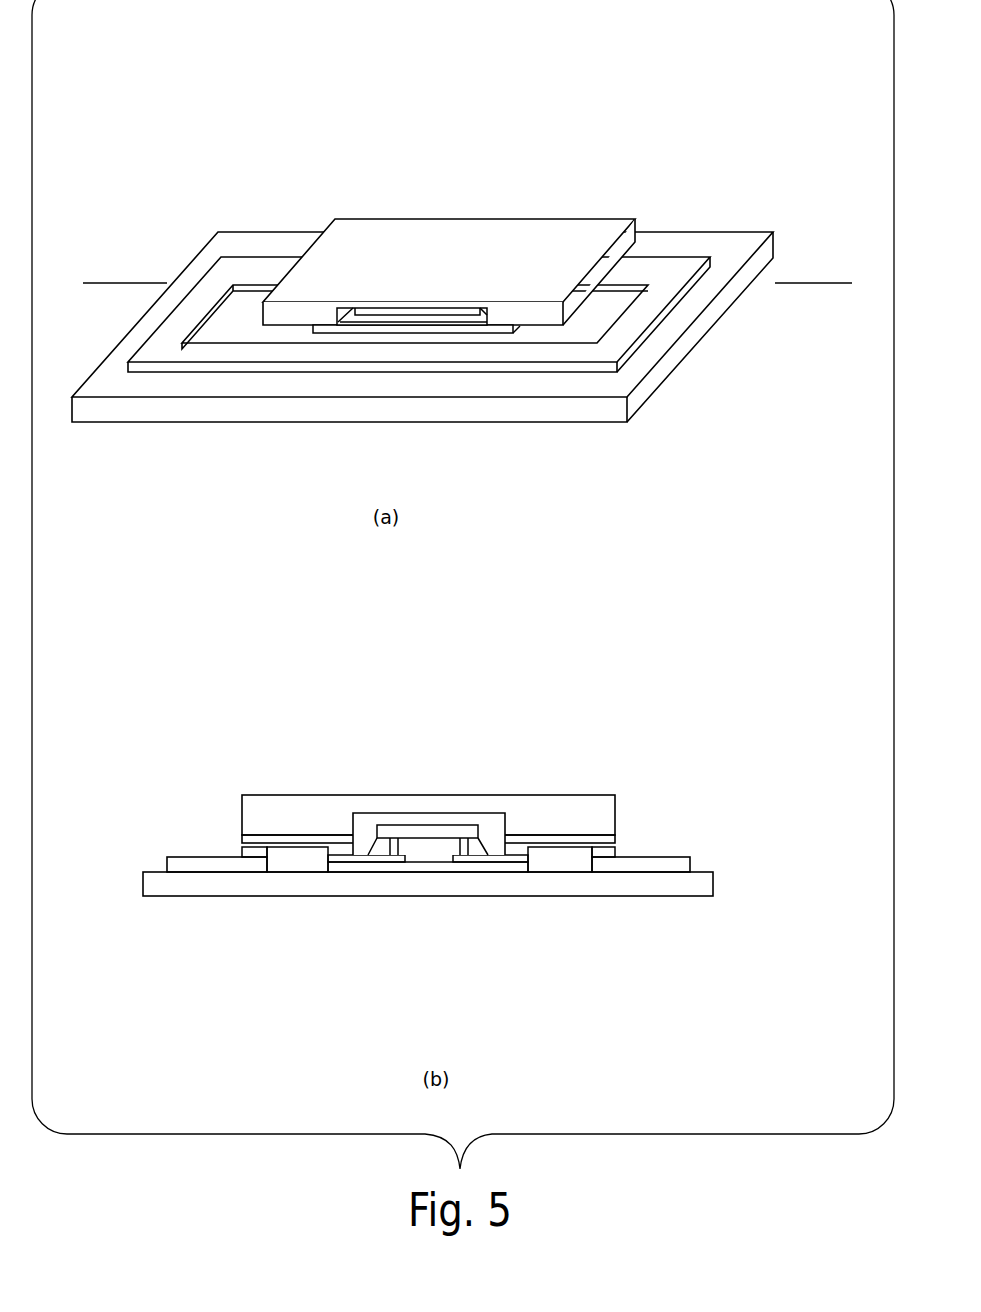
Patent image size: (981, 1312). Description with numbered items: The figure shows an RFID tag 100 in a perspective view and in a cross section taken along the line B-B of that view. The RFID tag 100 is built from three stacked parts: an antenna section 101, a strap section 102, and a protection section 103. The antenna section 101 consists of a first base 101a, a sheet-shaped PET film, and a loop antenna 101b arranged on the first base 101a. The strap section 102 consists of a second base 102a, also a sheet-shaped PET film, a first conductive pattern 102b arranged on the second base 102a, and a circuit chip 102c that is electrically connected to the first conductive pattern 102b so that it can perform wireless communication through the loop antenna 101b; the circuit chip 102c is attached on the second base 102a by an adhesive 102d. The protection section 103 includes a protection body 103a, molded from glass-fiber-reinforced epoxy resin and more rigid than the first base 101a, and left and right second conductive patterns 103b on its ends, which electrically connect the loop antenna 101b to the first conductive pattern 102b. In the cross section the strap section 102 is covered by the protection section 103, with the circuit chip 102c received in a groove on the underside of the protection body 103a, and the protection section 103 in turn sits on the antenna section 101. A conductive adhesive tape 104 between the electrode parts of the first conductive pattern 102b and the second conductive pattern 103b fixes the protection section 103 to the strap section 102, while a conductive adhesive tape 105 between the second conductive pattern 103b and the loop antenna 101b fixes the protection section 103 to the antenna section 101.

The RFID tag 100 is at (470, 515).
The antenna section 101 is at (463, 505).
The first base 101a is at (713, 888).
The loop antenna 101b is at (692, 863).
The strap section 102 is at (385, 656).
The second base 102a is at (340, 868).
The first conductive pattern 102b is at (372, 860).
The circuit chip 102c is at (428, 893).
The adhesive 102d is at (438, 857).
The protection section 103 is at (360, 481).
The protection body 103a is at (242, 812).
The second conductive pattern 103b is at (242, 840).
The conductive adhesive tape 104 is at (328, 849).
The conductive adhesive tape 105 is at (250, 850).